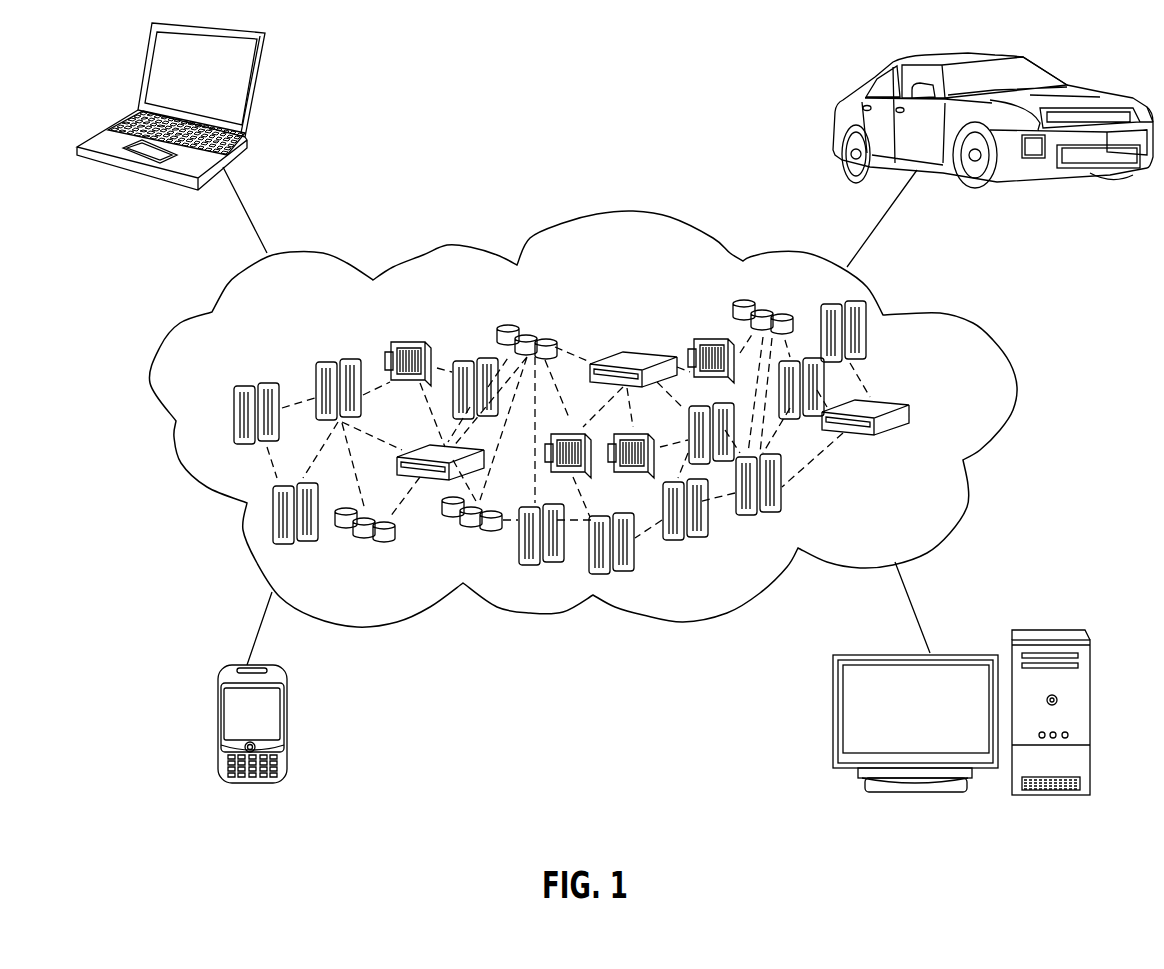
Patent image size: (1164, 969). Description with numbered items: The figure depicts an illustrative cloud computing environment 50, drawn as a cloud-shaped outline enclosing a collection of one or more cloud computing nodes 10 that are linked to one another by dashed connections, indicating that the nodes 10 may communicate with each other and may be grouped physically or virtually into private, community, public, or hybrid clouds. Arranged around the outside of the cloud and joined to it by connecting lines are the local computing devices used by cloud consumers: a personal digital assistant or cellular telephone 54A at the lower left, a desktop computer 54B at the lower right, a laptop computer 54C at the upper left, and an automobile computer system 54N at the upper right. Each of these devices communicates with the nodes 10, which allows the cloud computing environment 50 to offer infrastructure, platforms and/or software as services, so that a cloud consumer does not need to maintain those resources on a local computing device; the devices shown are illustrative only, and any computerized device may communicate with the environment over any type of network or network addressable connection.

The cloud computing nodes 10 is at (948, 414).
The cloud computing environment 50 is at (972, 327).
The cellular telephone 54A is at (220, 728).
The desktop computer 54B is at (1055, 625).
The laptop computer 54C is at (257, 95).
The automobile computer system 54N is at (843, 100).